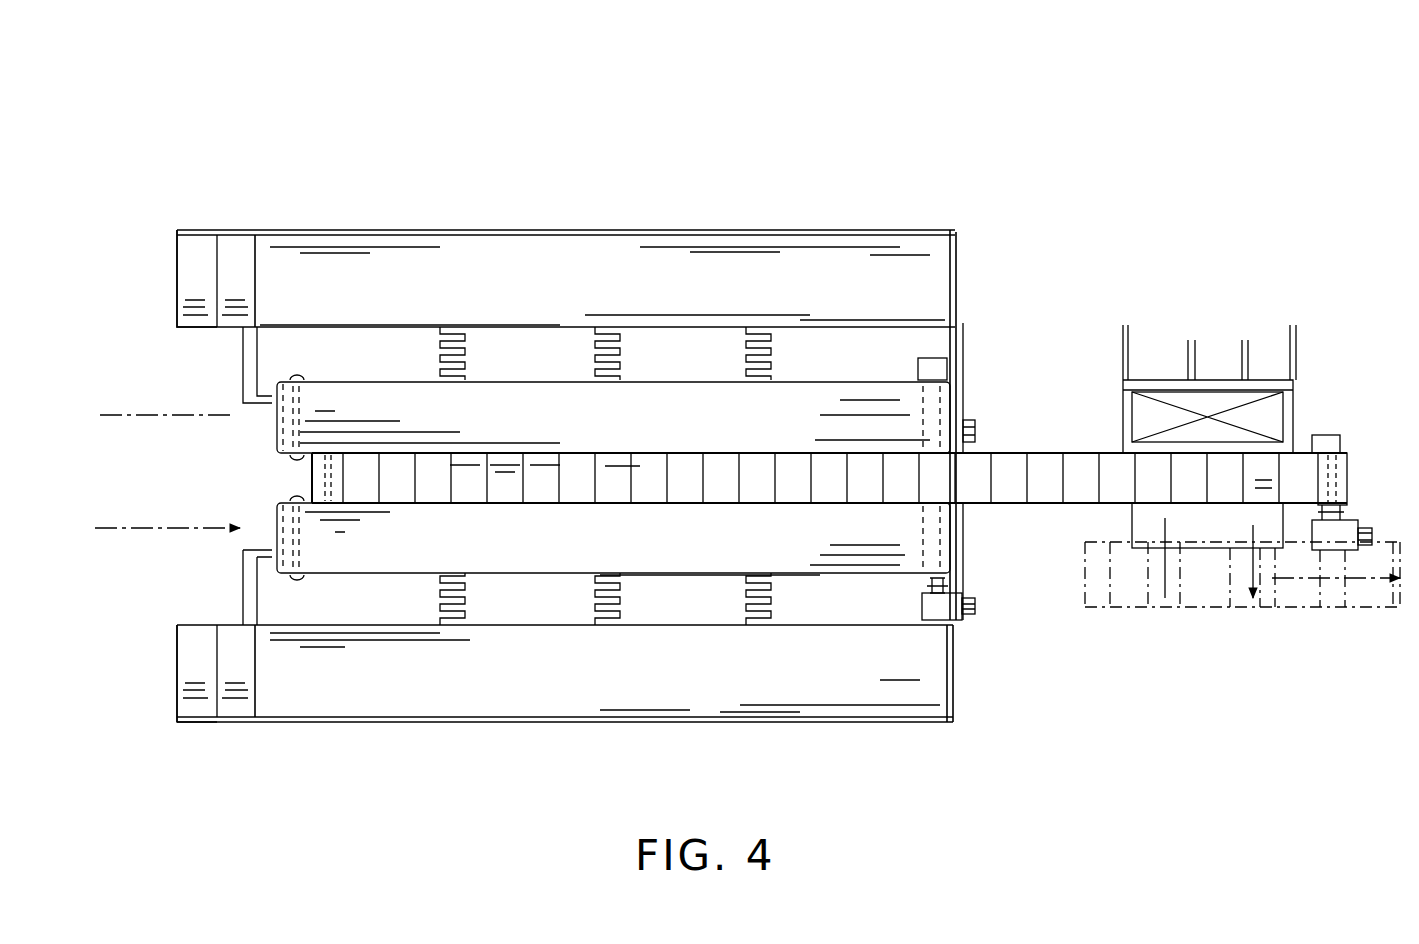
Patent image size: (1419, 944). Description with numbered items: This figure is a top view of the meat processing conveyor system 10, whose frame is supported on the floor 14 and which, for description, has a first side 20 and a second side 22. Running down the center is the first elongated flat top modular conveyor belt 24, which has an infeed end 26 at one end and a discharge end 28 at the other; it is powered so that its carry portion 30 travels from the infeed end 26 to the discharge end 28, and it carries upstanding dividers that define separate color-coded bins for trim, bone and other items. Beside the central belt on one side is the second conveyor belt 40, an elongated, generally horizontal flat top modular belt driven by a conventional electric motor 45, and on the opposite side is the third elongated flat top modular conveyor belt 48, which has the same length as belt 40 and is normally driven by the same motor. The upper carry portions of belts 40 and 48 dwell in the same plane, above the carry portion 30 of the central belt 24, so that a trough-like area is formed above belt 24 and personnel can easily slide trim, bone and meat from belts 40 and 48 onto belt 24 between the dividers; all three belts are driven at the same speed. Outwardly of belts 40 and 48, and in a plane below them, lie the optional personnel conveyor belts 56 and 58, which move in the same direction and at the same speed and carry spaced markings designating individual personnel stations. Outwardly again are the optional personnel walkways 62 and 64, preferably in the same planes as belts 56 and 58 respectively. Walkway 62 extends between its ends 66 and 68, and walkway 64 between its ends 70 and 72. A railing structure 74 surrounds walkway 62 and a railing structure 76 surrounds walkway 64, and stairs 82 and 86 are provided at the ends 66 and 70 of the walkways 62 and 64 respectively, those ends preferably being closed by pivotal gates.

The meat processing conveyor system 10 is at (843, 168).
The floor 14 is at (1062, 840).
The first side 20 is at (597, 363).
The second side 22 is at (523, 744).
The first elongated flat top modular conveyor belt 24 is at (829, 507).
The infeed end 26 is at (298, 475).
The discharge end 28 is at (1352, 475).
The carry portion 30 is at (1005, 490).
The second conveyor belt 40 is at (812, 425).
The electric motor 45 is at (968, 430).
The third elongated flat top modular conveyor belt 48 is at (855, 540).
The personnel conveyor belt 56 is at (915, 350).
The personnel conveyor belt 58 is at (685, 603).
The personnel walkway 62 is at (930, 270).
The personnel walkway 64 is at (838, 672).
The end of walkway 62 66 is at (258, 280).
The end of walkway 62 68 is at (943, 308).
The end of walkway 64 70 is at (258, 672).
The end of walkway 64 72 is at (945, 660).
The railing structure 74 is at (830, 228).
The railing structure 76 is at (440, 722).
The stairs 82 is at (177, 272).
The stairs 86 is at (192, 683).